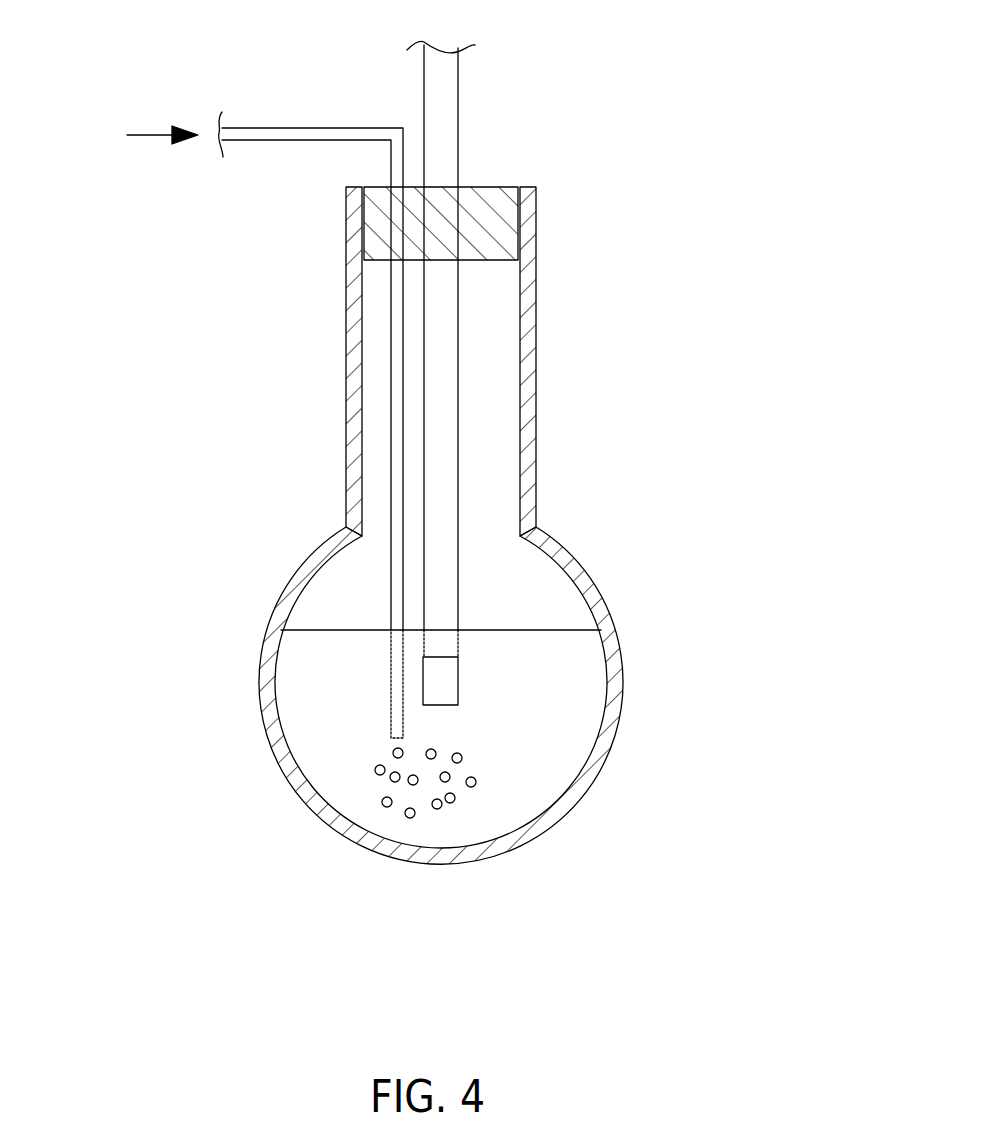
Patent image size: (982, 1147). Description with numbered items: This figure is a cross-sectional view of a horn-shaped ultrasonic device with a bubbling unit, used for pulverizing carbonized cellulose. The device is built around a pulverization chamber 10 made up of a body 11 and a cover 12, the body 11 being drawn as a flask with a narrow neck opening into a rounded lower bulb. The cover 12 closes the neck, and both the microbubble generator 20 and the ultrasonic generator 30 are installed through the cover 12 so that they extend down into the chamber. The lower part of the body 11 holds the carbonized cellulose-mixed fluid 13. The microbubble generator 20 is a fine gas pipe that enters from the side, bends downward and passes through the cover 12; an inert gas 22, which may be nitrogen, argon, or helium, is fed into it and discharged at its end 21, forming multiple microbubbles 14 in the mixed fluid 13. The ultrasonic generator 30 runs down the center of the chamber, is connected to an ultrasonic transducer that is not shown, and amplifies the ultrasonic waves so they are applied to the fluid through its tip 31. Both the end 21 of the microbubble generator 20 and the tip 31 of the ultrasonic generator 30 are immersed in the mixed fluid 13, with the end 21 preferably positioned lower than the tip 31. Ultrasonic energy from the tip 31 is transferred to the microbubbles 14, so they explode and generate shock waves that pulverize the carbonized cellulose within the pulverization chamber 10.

The pulverization chamber 10 is at (593, 778).
The body 11 is at (536, 452).
The cover 12 is at (498, 228).
The mixed fluid 13 is at (312, 688).
The microbubbles 14 is at (452, 802).
The microbubble generator 20 is at (318, 128).
The end of the microbubble generator 21 is at (392, 728).
The inert gas 22 is at (137, 134).
The ultrasonic generator 30 is at (458, 119).
The tip of the ultrasonic generator 31 is at (458, 680).